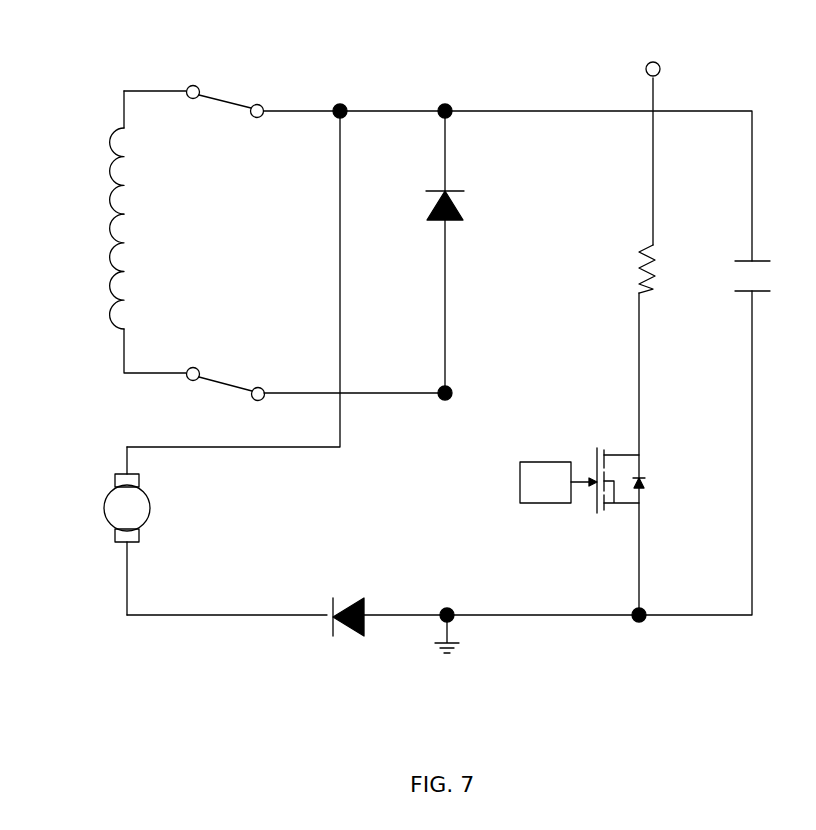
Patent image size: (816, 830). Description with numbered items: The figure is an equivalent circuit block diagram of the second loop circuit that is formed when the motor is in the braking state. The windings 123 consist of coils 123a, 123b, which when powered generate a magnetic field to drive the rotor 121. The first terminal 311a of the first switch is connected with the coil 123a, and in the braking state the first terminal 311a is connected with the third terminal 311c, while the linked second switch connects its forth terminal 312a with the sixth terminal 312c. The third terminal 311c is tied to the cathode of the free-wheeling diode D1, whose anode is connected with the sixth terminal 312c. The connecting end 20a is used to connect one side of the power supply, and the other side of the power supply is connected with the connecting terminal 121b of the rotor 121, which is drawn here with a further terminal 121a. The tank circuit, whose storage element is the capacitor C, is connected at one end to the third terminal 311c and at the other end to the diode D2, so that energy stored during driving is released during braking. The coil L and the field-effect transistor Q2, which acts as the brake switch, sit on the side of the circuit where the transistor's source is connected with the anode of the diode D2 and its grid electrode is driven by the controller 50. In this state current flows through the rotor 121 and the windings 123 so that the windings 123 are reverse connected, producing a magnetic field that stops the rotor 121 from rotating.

The connecting end 20a is at (660, 53).
The windings 123 is at (66, 210).
The coil 123a is at (112, 172).
The coil 123b is at (86, 271).
The first terminal 311a is at (187, 84).
The third terminal 311c is at (276, 100).
The forth terminal 312a is at (219, 367).
The sixth terminal 312c is at (278, 383).
The free-wheeling diode D1 is at (469, 205).
The diode D2 is at (353, 598).
The inductor L is at (632, 269).
The capacitor C is at (737, 276).
The field-effect transistor Q2 is at (638, 480).
The controller 50 is at (558, 482).
The rotor 121 is at (89, 531).
The motor first terminal 121a is at (105, 461).
The connecting terminal 121b is at (105, 578).